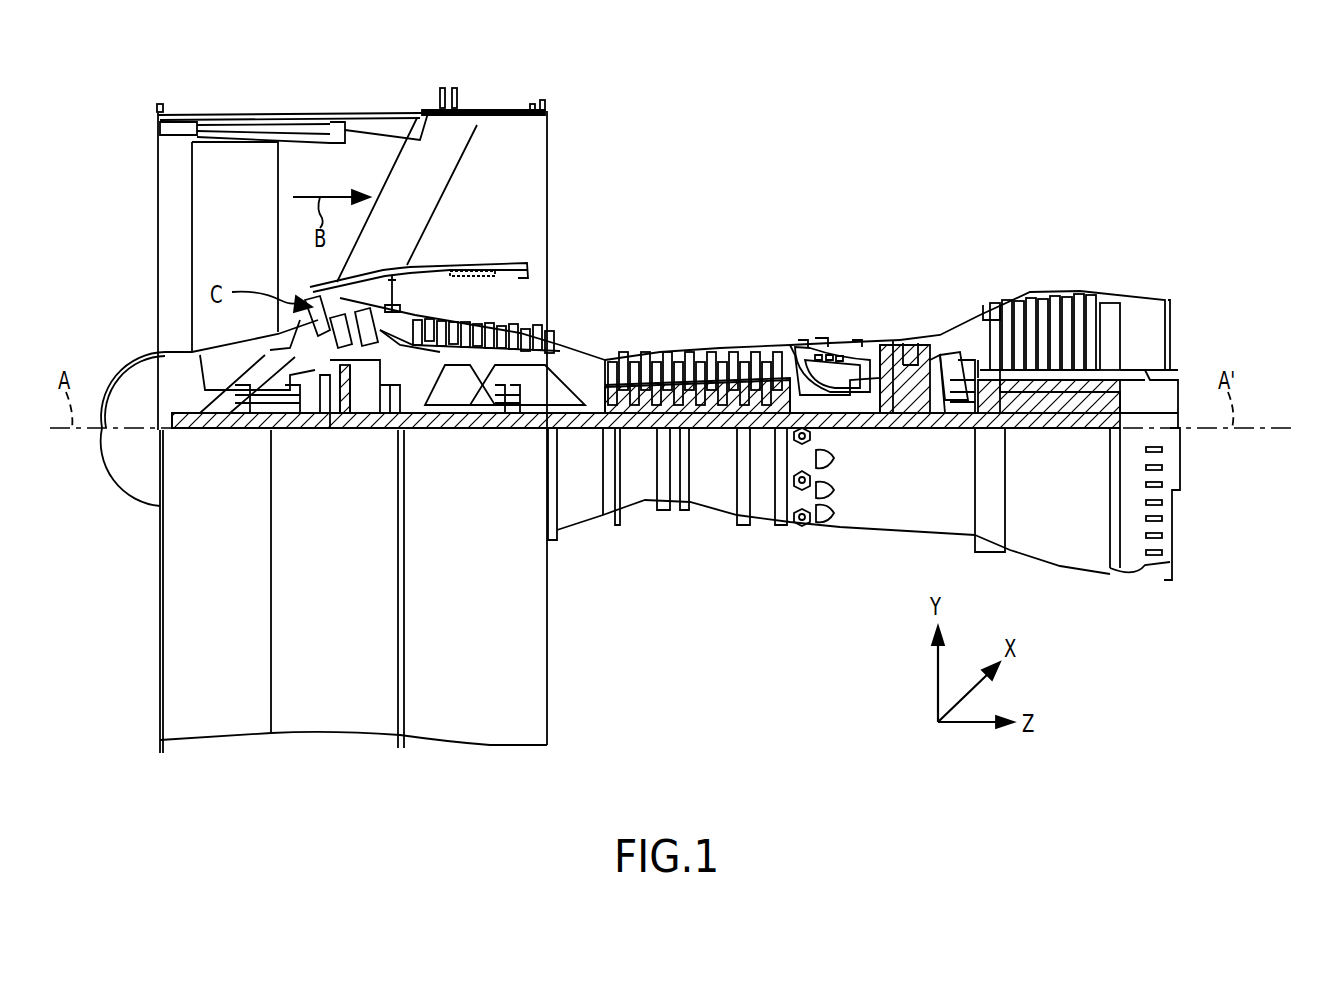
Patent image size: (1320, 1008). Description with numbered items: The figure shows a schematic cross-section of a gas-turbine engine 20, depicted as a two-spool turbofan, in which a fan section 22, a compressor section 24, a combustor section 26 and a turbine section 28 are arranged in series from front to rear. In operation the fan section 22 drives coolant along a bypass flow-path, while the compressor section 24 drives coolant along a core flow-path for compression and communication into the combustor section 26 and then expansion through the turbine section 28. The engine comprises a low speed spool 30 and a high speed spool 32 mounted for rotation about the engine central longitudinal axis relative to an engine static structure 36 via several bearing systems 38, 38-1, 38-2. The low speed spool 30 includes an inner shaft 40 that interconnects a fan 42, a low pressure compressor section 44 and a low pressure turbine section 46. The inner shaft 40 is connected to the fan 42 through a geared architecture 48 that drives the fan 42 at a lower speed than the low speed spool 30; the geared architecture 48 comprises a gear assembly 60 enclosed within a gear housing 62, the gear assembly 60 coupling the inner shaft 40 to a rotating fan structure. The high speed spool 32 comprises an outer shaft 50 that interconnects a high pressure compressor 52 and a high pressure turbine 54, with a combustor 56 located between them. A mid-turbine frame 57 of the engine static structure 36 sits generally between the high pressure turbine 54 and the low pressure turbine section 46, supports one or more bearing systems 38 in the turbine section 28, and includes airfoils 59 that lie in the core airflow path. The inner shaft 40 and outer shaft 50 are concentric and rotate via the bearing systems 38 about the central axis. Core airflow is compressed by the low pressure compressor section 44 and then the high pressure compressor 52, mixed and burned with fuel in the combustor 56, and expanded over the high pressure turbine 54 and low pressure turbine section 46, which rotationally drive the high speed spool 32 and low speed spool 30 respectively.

The gas-turbine engine 20 is at (893, 119).
The fan section 22 is at (349, 400).
The compressor section 24 is at (596, 205).
The combustor section 26 is at (839, 205).
The turbine section 28 is at (1001, 205).
The low speed spool 30 is at (761, 493).
The high speed spool 32 is at (807, 340).
The engine static structure 36 is at (733, 612).
The bearing system 38 is at (1057, 449).
The bearing system 38-1 is at (251, 416).
The bearing system 38-2 is at (505, 428).
The inner shaft 40 is at (587, 500).
The fan 42 is at (235, 247).
The low pressure compressor section 44 is at (457, 309).
The low pressure turbine section 46 is at (1078, 339).
The geared architecture 48 is at (238, 424).
The outer shaft 50 is at (829, 477).
The high pressure compressor 52 is at (752, 355).
The high pressure turbine 54 is at (905, 347).
The combustor 56 is at (832, 345).
The mid-turbine frame 57 is at (1035, 328).
The airfoils 59 is at (966, 340).
The gear assembly 60 is at (421, 430).
The gear housing 62 is at (370, 386).